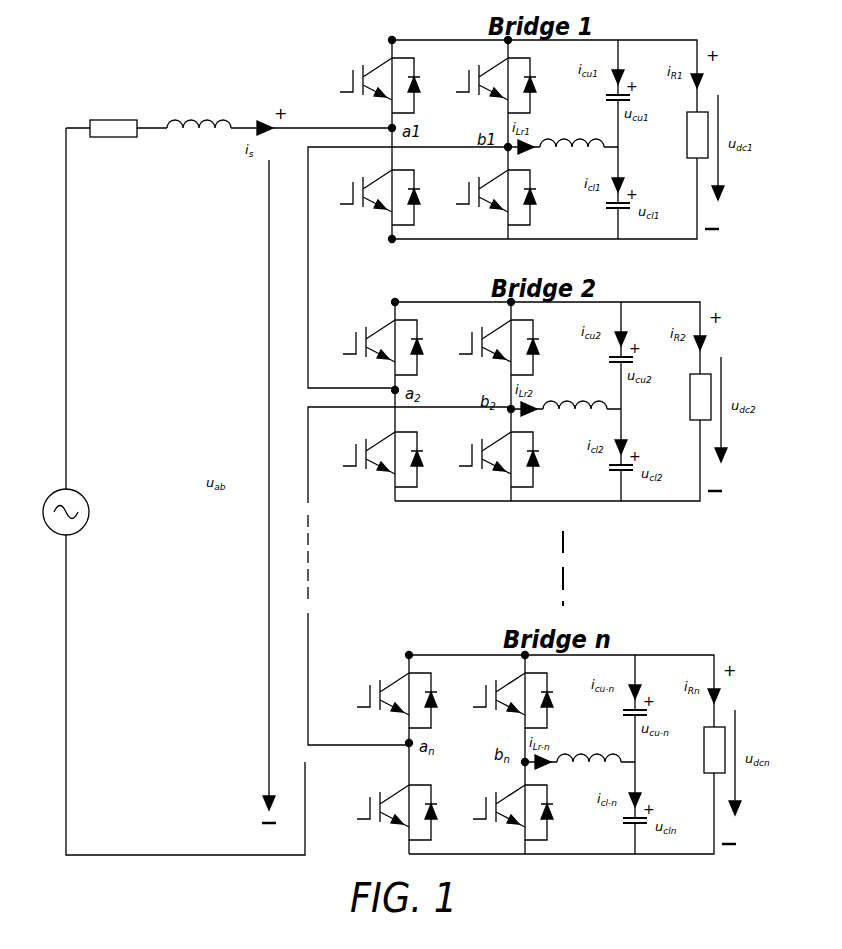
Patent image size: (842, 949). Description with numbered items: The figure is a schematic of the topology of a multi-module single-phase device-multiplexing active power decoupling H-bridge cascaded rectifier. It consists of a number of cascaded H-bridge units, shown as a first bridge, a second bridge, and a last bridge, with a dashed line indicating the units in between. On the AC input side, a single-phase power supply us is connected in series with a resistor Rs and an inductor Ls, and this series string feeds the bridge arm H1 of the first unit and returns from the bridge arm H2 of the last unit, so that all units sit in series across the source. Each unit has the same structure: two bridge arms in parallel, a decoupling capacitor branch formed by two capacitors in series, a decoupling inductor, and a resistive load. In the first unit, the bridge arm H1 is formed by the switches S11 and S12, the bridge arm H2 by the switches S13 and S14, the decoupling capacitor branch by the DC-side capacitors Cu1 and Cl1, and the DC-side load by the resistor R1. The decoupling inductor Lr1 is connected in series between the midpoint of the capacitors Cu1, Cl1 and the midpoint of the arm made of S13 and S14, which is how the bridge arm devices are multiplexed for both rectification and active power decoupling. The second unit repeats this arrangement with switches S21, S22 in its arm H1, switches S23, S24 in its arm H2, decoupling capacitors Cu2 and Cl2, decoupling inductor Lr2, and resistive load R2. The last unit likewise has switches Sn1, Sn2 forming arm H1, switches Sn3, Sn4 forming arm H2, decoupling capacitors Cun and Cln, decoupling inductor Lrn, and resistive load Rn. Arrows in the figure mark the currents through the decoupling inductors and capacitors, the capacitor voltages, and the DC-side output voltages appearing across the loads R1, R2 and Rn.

The resistor Rs is at (113, 119).
The inductor Ls is at (199, 105).
The power supply us is at (81, 512).
The switching device of bridge arm H1 S11 is at (369, 85).
The switching device of bridge arm H1 S12 is at (369, 197).
The switching device of bridge arm H2 S13 is at (484, 85).
The switching device of bridge arm H2 S14 is at (484, 197).
The decoupling inductor Lr1 is at (572, 131).
The DC-side capacitor Cu1 is at (605, 98).
The DC-side capacitor Cl1 is at (607, 209).
The DC-side resistive load R1 is at (688, 135).
The switching device of bridge arm H1 S21 is at (372, 347).
The switching device of bridge arm H1 S22 is at (372, 459).
The switching device of bridge arm H2 S23 is at (487, 347).
The switching device of bridge arm H2 S24 is at (487, 459).
The decoupling inductor Lr2 is at (575, 393).
The DC-side capacitor Cu2 is at (608, 360).
The DC-side capacitor Cl2 is at (610, 471).
The DC-side resistive load R2 is at (691, 397).
The switching device of bridge arm H1 Sn1 is at (386, 700).
The switching device of bridge arm H1 Sn2 is at (386, 812).
The switching device of bridge arm H2 Sn3 is at (501, 700).
The switching device of bridge arm H2 Sn4 is at (501, 812).
The decoupling inductor Lrn is at (589, 746).
The DC-side capacitor Cun is at (621, 713).
The DC-side capacitor Cln is at (624, 824).
The DC-side resistive load Rn is at (705, 750).